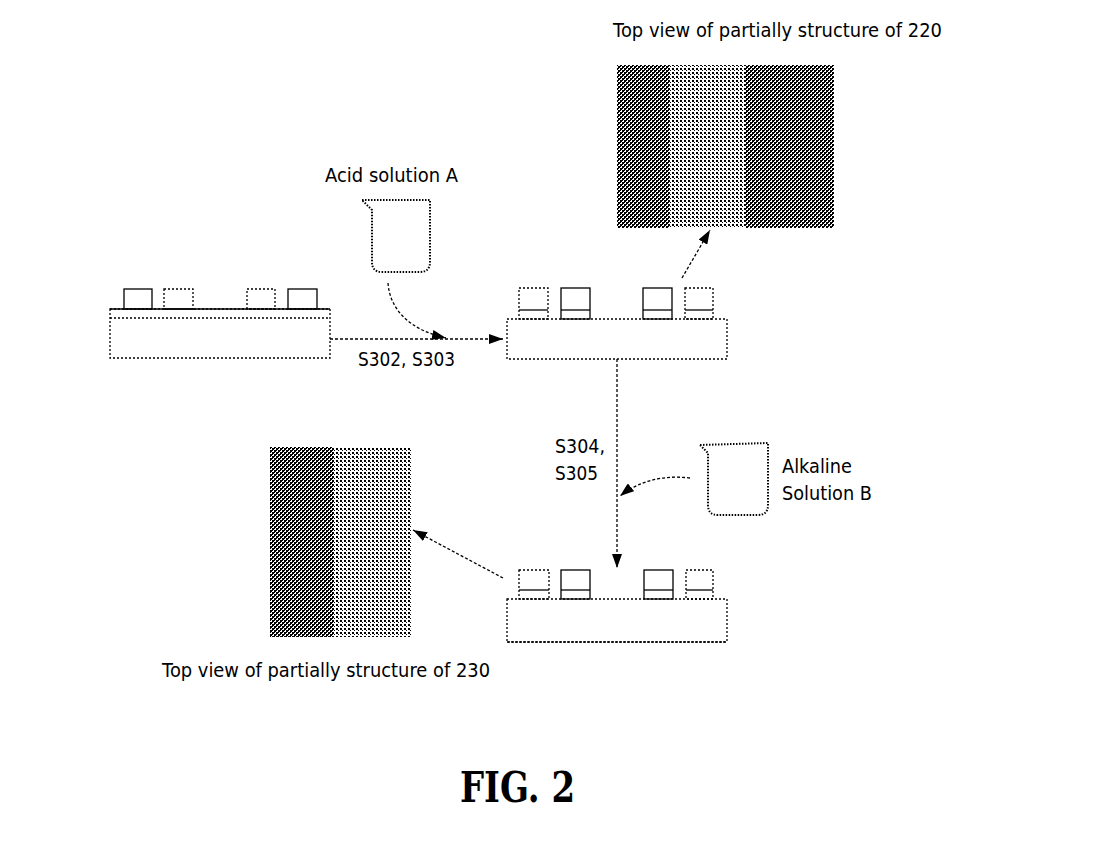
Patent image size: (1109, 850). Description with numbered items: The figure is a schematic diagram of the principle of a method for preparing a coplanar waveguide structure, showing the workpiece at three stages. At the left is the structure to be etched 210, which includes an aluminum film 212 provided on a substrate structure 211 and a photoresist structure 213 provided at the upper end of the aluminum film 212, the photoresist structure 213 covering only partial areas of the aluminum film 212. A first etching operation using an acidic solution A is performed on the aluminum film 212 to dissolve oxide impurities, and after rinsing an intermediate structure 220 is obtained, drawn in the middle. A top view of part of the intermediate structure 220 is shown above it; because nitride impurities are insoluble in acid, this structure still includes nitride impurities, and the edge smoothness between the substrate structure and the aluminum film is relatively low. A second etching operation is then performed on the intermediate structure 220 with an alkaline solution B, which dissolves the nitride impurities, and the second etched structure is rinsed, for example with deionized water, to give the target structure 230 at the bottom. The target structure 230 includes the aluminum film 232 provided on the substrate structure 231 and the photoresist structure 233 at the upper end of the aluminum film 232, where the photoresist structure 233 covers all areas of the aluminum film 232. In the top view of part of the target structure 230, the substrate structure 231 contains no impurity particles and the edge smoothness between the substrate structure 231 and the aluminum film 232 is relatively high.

The structure to be etched 210 is at (235, 370).
The substrate structure 211 is at (177, 353).
The aluminum film 212 is at (135, 309).
The photoresist structure 213 is at (137, 292).
The intermediate structure 220 is at (747, 338).
The target structure 230 is at (648, 655).
The substrate structure 231 is at (713, 628).
The aluminum film 232 is at (717, 583).
The photoresist structure 233 is at (698, 575).